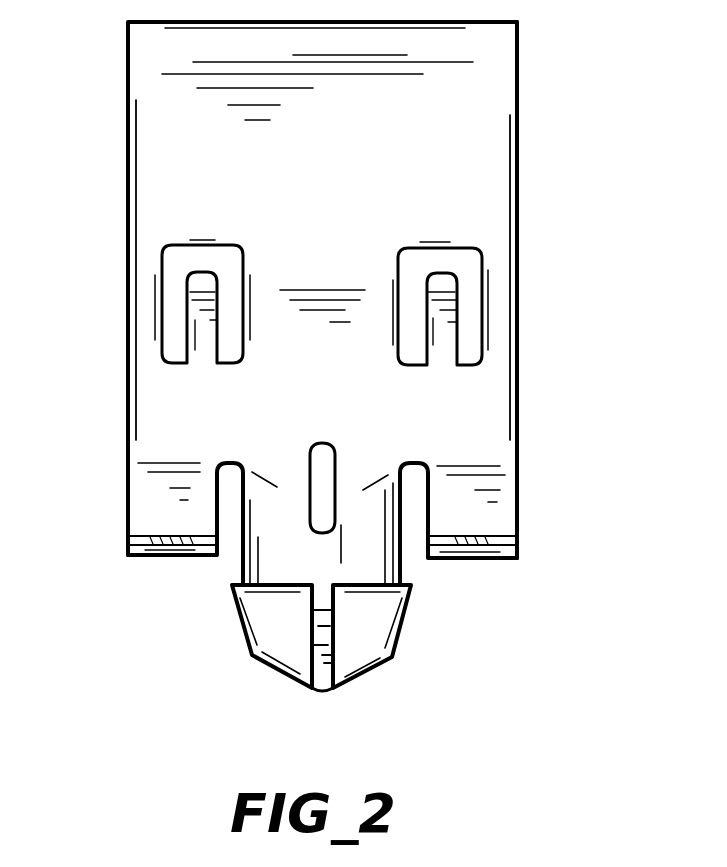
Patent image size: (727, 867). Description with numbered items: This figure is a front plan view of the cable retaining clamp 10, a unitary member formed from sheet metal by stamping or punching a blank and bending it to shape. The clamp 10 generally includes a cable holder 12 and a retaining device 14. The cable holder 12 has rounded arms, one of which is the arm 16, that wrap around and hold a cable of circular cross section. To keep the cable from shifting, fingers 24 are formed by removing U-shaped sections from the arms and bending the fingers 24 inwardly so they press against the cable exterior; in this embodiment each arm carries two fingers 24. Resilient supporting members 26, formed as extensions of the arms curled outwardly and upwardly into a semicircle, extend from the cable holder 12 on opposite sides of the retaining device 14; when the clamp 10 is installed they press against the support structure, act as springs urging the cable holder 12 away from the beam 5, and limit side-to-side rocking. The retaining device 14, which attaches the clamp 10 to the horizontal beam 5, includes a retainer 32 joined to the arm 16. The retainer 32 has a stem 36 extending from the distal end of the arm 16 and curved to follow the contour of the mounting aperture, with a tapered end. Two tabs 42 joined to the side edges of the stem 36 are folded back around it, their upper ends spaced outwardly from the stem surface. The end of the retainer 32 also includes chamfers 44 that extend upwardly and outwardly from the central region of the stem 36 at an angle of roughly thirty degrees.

The cable retaining clamp 10 is at (102, 100).
The cable holder 12 is at (519, 92).
The arm 16 is at (447, 203).
The fingers 24 is at (445, 320).
The resilient supporting members 26 is at (155, 510).
The stem 36 is at (288, 548).
The retaining device 14 is at (351, 667).
The tabs 42 is at (273, 617).
The chamfers 44 is at (282, 672).
The retainer 32 is at (322, 690).
The horizontal beam 5 is at (175, 388).